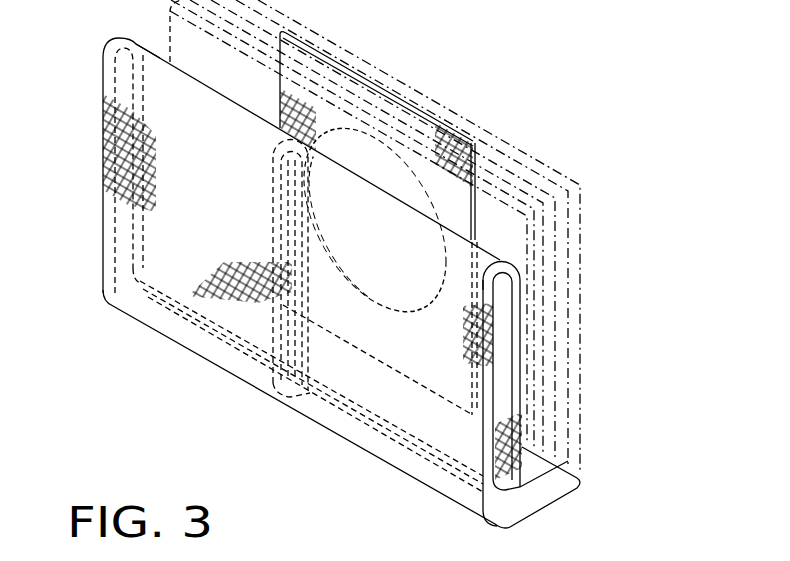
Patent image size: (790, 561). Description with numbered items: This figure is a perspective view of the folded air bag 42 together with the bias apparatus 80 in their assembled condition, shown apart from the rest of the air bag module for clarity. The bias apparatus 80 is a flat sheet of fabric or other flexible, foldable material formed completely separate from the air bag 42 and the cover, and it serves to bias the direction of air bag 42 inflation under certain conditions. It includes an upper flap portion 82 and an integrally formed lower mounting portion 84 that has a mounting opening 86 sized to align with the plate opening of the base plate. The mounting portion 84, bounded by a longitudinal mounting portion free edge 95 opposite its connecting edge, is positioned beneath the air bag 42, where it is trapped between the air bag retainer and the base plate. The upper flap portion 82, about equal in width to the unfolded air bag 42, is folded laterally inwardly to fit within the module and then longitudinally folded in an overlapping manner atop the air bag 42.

The air bag 42 is at (597, 191).
The bias apparatus 80 is at (115, 38).
The upper flap portion 82 is at (176, 342).
The lower mounting portion 84 is at (368, 90).
The mounting opening 86 is at (372, 145).
The mounting portion free edge 95 is at (472, 125).